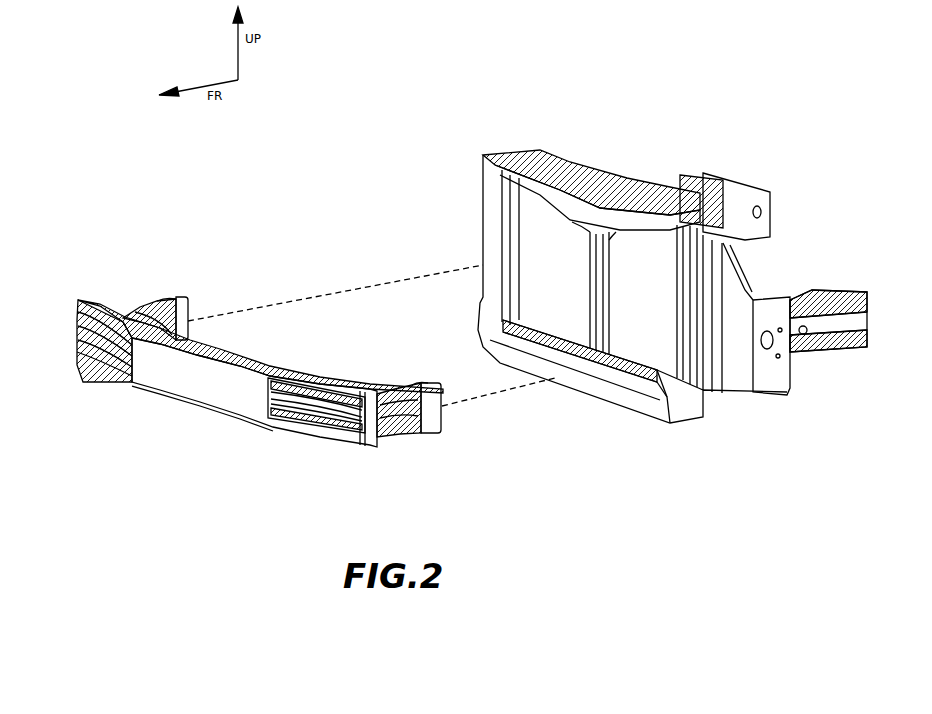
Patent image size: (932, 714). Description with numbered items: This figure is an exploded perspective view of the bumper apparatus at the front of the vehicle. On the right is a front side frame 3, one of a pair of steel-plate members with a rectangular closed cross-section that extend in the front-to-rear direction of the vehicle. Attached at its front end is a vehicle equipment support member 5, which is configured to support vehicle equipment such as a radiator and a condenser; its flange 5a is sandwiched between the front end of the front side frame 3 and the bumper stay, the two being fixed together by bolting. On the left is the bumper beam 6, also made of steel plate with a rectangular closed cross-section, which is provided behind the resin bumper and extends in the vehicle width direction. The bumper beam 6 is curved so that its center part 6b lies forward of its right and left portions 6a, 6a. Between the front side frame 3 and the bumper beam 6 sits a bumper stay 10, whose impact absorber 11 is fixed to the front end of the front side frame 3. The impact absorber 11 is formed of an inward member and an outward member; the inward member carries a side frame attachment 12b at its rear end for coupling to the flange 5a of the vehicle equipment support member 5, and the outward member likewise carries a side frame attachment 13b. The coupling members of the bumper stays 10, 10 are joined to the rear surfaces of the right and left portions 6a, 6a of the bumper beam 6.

The front side frame 3 is at (843, 326).
The vehicle equipment support member 5 is at (600, 410).
The flange 5a is at (760, 395).
The bumper beam 6 is at (239, 387).
The right and left portions 6a is at (83, 382).
The center part 6b is at (188, 383).
The bumper stay 10 is at (283, 365).
The impact absorber 11 is at (148, 306).
The side frame attachment 12b is at (182, 298).
The side frame attachment 13b is at (158, 298).